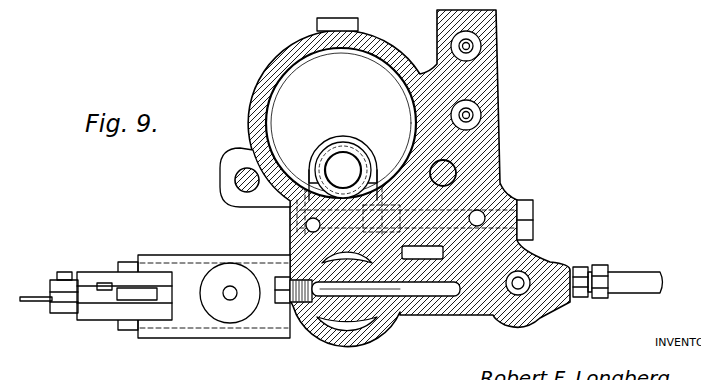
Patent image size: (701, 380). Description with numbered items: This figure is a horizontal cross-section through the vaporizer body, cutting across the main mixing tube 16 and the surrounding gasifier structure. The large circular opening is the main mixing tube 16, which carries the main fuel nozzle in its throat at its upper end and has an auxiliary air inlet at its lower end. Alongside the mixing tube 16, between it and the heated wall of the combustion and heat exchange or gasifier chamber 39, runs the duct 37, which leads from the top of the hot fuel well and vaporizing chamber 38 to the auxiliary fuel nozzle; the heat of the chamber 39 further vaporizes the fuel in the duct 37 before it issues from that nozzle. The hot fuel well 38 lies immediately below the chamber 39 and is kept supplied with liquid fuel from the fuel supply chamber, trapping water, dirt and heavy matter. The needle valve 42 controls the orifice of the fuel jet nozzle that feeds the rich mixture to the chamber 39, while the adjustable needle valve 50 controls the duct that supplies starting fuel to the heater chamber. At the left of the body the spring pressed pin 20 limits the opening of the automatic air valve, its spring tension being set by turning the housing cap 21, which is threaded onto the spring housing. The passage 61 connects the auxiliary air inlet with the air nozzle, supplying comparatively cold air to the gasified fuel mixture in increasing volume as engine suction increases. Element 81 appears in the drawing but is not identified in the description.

The main mixing tube 16 is at (333, 152).
The spring pressed pin 20 is at (232, 300).
The housing cap 21 is at (228, 322).
The duct 37 is at (306, 226).
The hot fuel well and vaporizing chamber 38 is at (263, 177).
The combustion and heat exchange or gasifier chamber 39 is at (270, 92).
The needle valve 42 is at (478, 116).
The adjustable needle valve 50 is at (472, 45).
The passage 61 is at (292, 279).
The tab 81 is at (330, 18).